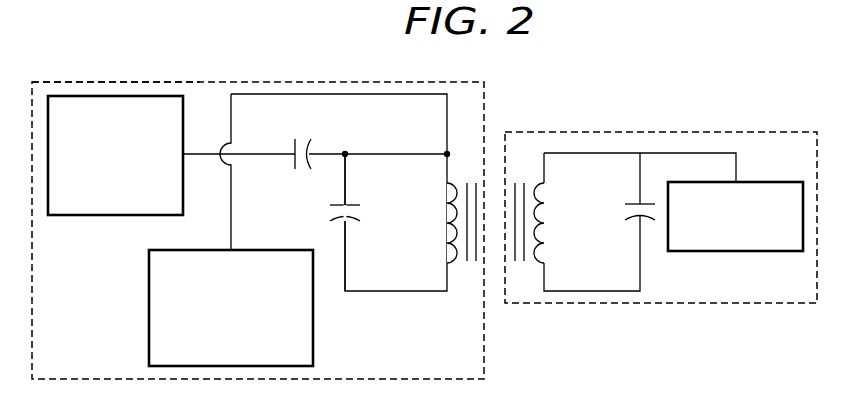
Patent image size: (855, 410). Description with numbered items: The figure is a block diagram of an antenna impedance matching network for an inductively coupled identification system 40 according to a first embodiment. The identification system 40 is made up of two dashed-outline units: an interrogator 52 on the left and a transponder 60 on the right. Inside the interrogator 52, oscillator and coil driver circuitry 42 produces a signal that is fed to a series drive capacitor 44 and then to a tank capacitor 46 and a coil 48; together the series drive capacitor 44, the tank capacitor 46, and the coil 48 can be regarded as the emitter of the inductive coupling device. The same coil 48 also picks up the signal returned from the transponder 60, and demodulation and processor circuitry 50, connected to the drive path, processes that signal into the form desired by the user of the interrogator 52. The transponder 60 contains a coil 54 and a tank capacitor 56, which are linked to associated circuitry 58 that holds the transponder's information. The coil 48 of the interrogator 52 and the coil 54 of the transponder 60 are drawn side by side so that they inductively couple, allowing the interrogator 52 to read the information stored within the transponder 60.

The inductively coupled identification system 40 is at (232, 68).
The oscillator and coil driver circuitry 42 is at (110, 215).
The series drive capacitor 44 is at (310, 145).
The tank capacitor 46 is at (336, 204).
The coil 48 is at (447, 197).
The demodulation and processor circuitry 50 is at (148, 306).
The interrogator 52 is at (115, 82).
The coil 54 is at (540, 190).
The tank capacitor 56 is at (637, 220).
The associated circuitry 58 is at (770, 182).
The transponder 60 is at (600, 132).